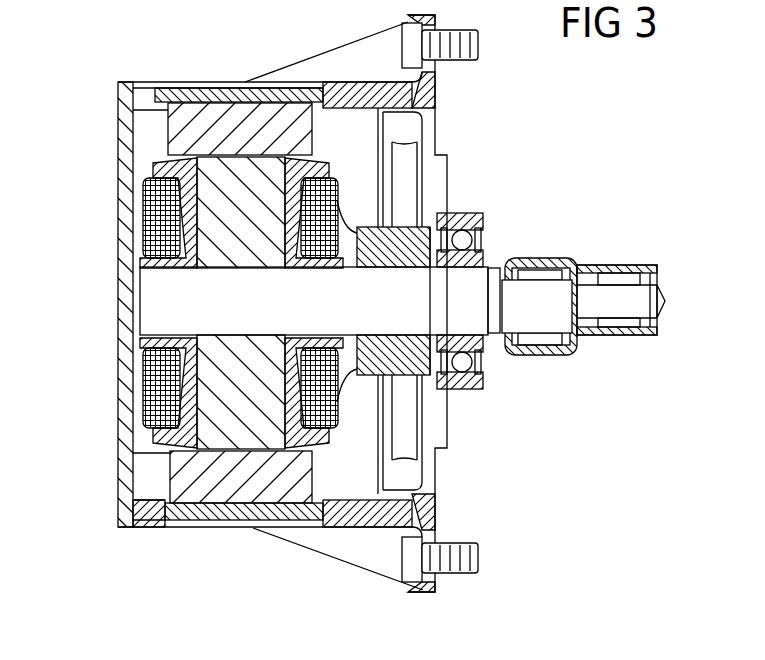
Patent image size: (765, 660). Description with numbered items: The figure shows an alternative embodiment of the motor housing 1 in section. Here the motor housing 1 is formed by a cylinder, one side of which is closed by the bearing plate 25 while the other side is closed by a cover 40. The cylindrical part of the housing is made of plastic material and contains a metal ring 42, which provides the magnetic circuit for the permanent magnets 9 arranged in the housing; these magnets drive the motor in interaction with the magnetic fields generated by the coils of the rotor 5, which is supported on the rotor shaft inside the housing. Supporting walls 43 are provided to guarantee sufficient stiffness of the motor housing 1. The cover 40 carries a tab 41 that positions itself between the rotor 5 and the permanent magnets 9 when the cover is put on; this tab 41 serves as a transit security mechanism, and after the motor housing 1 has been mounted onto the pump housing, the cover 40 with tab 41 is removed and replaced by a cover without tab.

The motor housing 1 is at (350, 500).
The rotor 5 is at (222, 413).
The permanent magnets 9 is at (263, 490).
The bearing plate 25 is at (442, 430).
The cover 40 is at (127, 355).
The tab 41 is at (153, 455).
The metal ring 42 is at (198, 522).
The supporting walls 43 is at (385, 565).